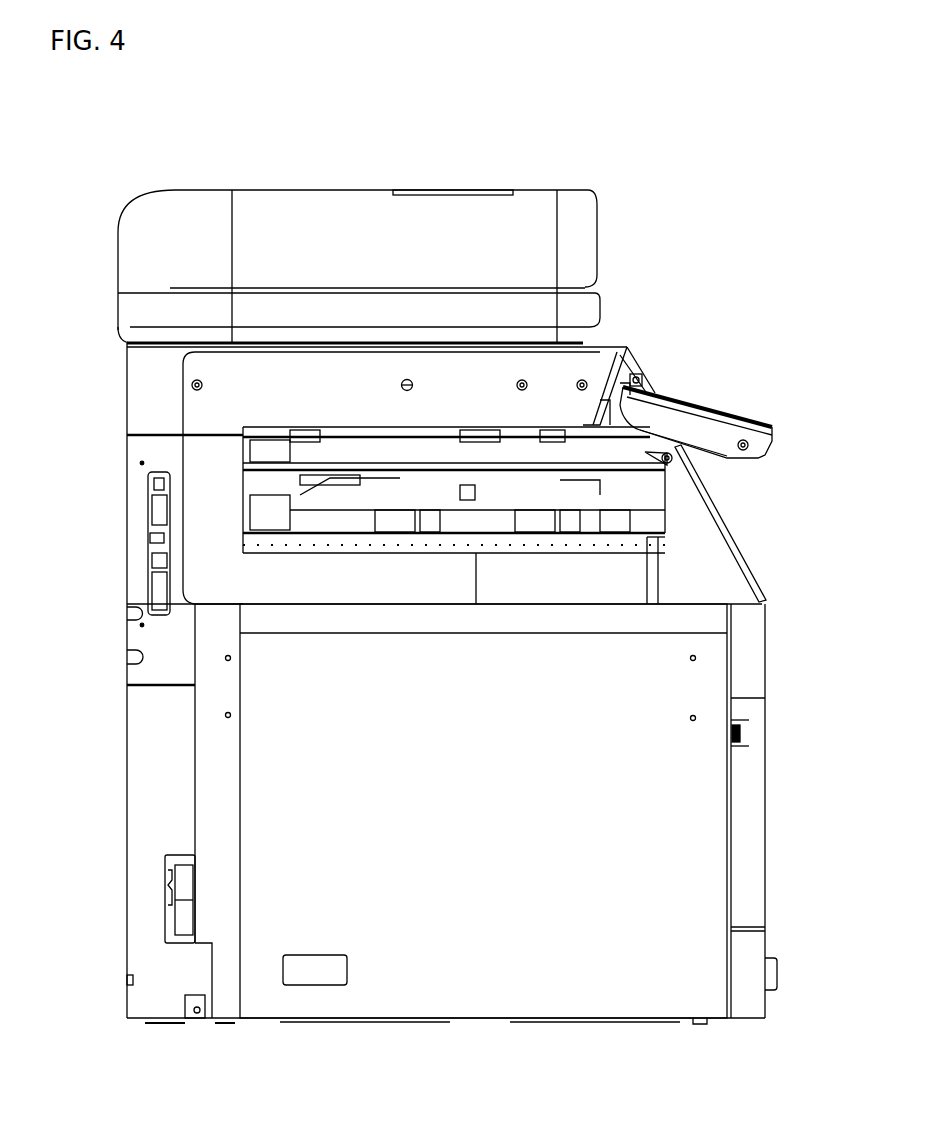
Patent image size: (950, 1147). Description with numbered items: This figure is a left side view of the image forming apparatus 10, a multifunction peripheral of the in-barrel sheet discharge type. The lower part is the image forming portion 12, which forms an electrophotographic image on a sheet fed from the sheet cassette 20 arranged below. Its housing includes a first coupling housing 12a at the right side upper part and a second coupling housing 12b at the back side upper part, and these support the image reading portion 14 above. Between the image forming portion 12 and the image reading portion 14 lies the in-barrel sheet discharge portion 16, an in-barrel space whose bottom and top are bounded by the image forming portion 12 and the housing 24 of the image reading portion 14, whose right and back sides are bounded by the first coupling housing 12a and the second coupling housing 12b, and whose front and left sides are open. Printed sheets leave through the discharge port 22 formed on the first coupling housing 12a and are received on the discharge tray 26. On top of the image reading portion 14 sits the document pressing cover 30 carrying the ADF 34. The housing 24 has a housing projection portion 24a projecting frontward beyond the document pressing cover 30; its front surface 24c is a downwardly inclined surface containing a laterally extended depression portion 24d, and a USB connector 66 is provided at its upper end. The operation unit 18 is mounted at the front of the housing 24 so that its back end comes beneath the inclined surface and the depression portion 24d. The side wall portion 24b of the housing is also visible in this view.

The image forming apparatus 10 is at (235, 68).
The image forming portion 12 is at (124, 670).
The first coupling housing 12a is at (703, 573).
The second coupling housing 12b is at (135, 502).
The image reading portion 14 is at (124, 388).
The in-barrel sheet discharge portion 16 is at (690, 508).
The operation unit 18 is at (773, 427).
The sheet cassette 20 is at (490, 965).
The discharge port 22 is at (362, 537).
The housing 24 is at (145, 418).
The housing projection portion 24a is at (633, 368).
The side wall portion of housing 24b is at (618, 362).
The front surface 24c is at (632, 428).
The depression portion 24d is at (625, 383).
The discharge tray 26 is at (545, 540).
The document pressing cover 30 is at (140, 316).
The ADF 34 is at (348, 200).
The USB connector 66 is at (640, 380).